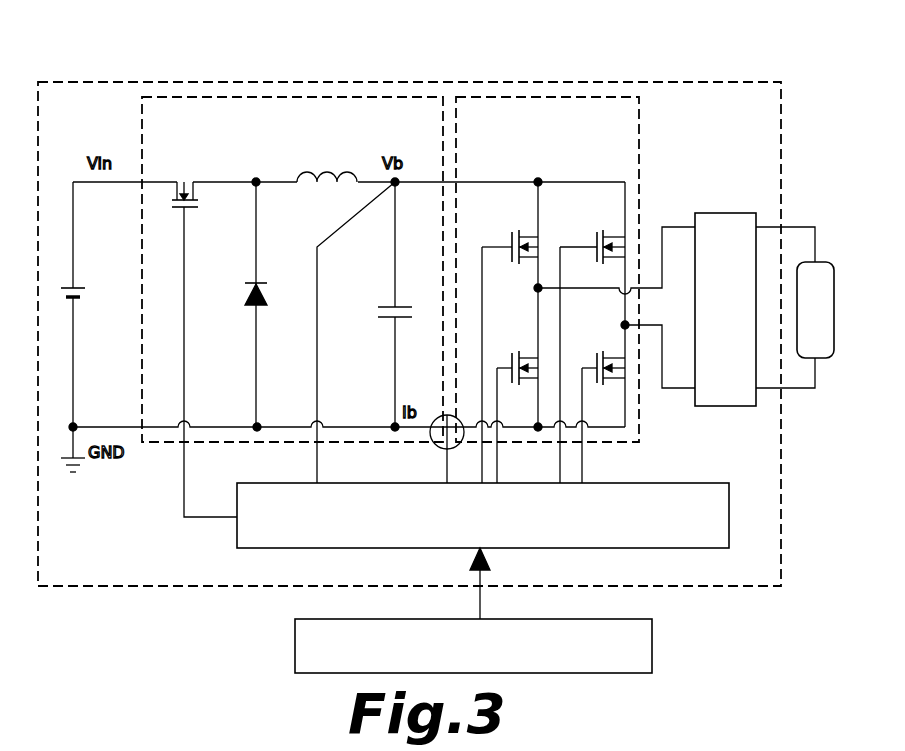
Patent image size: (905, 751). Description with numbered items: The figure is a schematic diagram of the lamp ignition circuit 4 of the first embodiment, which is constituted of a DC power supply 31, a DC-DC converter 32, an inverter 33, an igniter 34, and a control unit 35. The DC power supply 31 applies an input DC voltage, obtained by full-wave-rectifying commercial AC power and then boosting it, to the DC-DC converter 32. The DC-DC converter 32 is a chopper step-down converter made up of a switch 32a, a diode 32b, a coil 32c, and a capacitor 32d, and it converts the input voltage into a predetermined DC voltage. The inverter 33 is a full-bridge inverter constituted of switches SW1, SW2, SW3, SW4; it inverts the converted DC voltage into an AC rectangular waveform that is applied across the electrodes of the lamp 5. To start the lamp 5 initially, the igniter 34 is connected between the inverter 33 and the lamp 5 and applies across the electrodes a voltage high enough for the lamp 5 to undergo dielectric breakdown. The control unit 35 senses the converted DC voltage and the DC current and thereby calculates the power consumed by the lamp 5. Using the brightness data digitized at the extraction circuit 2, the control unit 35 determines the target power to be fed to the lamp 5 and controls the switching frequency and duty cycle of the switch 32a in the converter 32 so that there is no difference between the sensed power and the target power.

The extraction circuit 2 is at (305, 650).
The lamp ignition circuit 4 is at (95, 98).
The lamp 5 is at (808, 272).
The DC power supply 31 is at (79, 286).
The DC-DC converter 32 is at (329, 112).
The switch 32a is at (206, 194).
The diode 32b is at (249, 288).
The coil 32c is at (312, 196).
The capacitor 32d is at (386, 318).
The inverter 33 is at (519, 112).
The igniter 34 is at (722, 230).
The control unit 35 is at (245, 535).
The switch SW1 is at (511, 236).
The switch SW2 is at (596, 357).
The switch SW3 is at (596, 236).
The switch SW4 is at (511, 357).